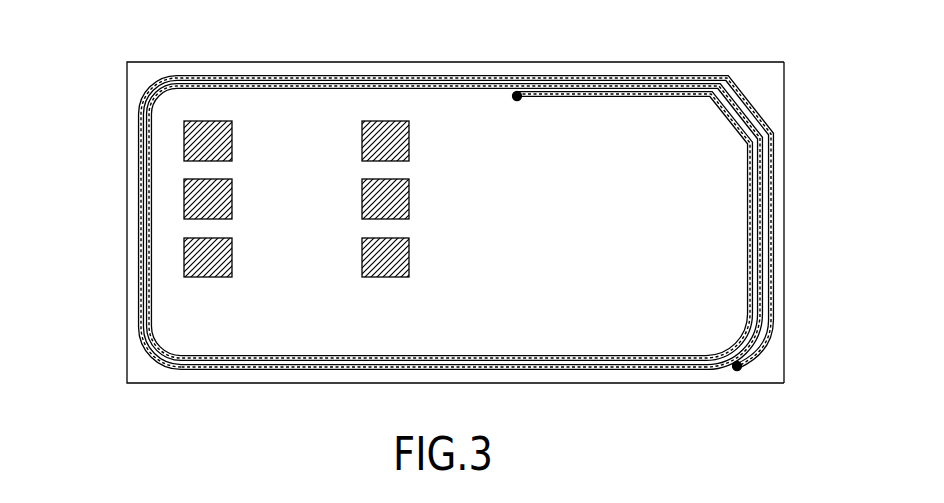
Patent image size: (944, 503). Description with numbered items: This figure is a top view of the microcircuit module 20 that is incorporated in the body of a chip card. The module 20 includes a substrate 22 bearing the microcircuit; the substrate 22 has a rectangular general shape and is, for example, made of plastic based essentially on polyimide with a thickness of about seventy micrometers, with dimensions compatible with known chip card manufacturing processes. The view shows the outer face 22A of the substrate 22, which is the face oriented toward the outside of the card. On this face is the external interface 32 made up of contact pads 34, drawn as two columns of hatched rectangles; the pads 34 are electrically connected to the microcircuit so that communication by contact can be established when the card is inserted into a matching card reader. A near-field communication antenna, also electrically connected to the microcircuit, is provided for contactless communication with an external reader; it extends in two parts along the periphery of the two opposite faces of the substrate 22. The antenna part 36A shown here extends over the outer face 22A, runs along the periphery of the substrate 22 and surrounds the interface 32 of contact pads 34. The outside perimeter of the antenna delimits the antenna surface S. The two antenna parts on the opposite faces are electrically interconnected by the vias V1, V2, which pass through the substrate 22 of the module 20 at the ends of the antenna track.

The microcircuit module 20 is at (122, 61).
The substrate 22 is at (778, 385).
The outer face 22A is at (780, 198).
The external interface 32 is at (468, 225).
The contact pads 34 is at (233, 257).
The antenna part 36A is at (193, 371).
The antenna surface S is at (307, 333).
The via V1 is at (515, 101).
The via V2 is at (737, 371).